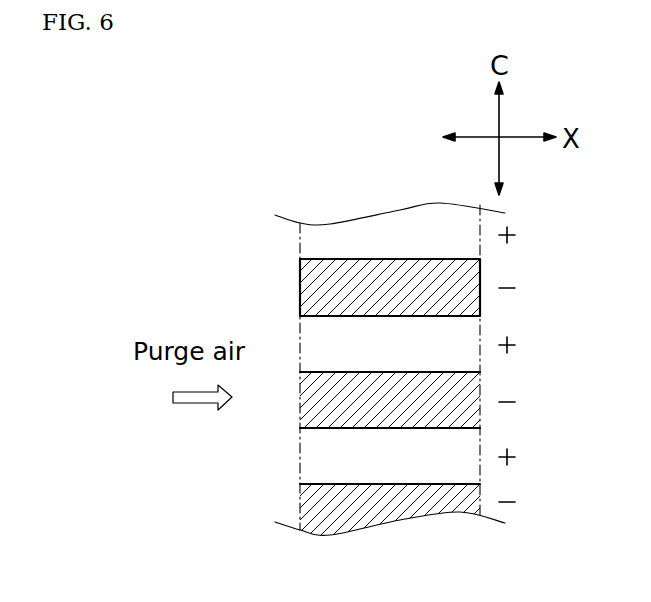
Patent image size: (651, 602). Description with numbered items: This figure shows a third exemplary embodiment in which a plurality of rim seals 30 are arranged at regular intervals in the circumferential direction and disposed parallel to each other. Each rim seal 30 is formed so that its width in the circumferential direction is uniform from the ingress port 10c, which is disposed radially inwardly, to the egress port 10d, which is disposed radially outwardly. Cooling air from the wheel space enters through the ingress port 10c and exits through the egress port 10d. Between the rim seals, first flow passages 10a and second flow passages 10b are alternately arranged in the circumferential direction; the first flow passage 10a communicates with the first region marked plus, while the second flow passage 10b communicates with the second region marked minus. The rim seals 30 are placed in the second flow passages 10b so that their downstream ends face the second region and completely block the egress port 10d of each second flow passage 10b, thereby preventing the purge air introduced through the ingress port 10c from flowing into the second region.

The rim seal 30 is at (357, 250).
The first flow passage 10a is at (398, 457).
The second flow passage 10b is at (370, 428).
The ingress port 10c is at (300, 443).
The egress port 10d is at (480, 434).